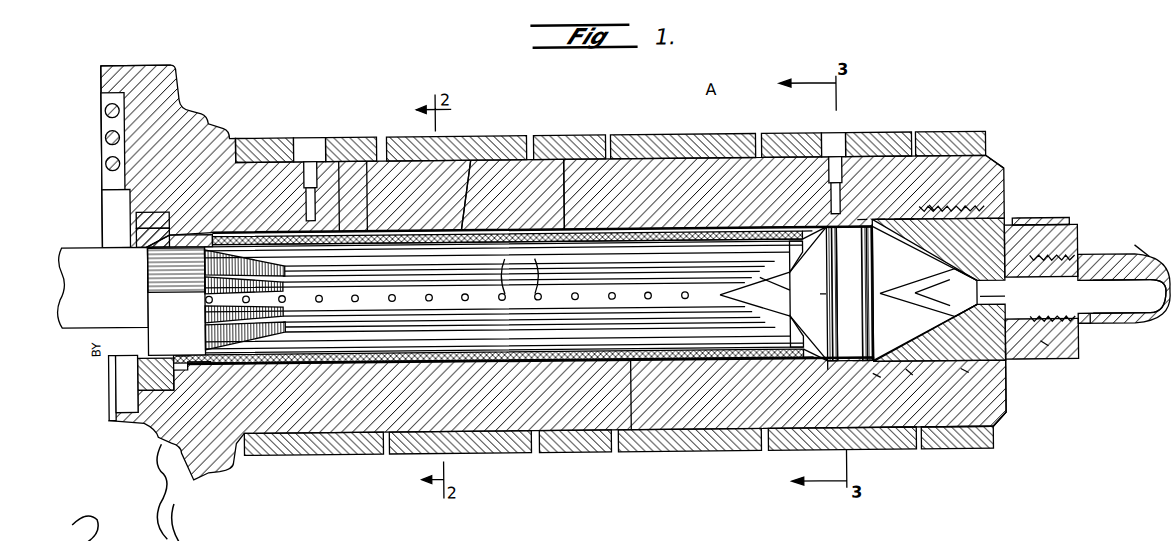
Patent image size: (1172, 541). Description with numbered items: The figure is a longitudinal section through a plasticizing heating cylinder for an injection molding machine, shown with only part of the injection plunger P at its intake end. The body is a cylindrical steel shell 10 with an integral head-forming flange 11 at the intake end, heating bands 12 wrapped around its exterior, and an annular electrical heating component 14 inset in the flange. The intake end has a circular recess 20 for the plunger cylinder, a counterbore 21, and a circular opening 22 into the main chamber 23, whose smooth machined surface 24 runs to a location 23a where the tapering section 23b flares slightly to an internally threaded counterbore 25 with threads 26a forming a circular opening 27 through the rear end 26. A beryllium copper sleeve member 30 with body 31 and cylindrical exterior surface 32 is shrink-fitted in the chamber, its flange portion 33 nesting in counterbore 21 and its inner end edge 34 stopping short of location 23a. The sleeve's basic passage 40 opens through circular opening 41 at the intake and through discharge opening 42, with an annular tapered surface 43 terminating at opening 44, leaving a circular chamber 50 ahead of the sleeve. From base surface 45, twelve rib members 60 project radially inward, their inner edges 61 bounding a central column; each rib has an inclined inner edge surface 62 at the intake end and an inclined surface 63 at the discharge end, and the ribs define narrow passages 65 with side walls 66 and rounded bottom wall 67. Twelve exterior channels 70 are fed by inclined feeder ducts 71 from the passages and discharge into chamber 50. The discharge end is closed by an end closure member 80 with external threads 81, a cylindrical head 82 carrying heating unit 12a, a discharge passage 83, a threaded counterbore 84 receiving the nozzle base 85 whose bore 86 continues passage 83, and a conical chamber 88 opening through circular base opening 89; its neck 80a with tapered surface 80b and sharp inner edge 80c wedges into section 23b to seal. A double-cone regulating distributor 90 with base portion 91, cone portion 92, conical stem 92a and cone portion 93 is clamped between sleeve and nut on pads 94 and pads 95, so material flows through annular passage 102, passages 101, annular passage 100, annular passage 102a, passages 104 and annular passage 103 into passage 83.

The shell 10 is at (492, 178).
The head-forming flange 11 is at (180, 87).
The heating bands 12 is at (410, 147).
The heating unit 12a is at (1072, 361).
The annular electrical heating component 14 is at (110, 108).
The circular recess 20 is at (126, 197).
The bore or circular recess 21 is at (137, 232).
The circular opening 22 is at (200, 250).
The main chamber 23 is at (352, 140).
The location 23a is at (858, 221).
The tapering section 23b is at (878, 221).
The surface 24 is at (565, 226).
The counterbore 25 is at (1000, 194).
The rear end 26 is at (1010, 402).
The internal threads 26a is at (950, 433).
The circular opening 27 is at (1008, 373).
The sleeve member 30 is at (632, 237).
The body 31 is at (192, 342).
The cylindrical exterior surface 32 is at (463, 226).
The flange portion 33 is at (137, 216).
The inner end edge 34 is at (854, 364).
The basic passage 40 is at (160, 305).
The circular opening 41 is at (133, 368).
The discharge opening 42 is at (826, 368).
The annular tapered surface 43 is at (822, 225).
The circular opening 44 is at (815, 362).
The base surface 45 is at (197, 352).
The circular chamber 50 is at (905, 441).
The rib members 60 is at (283, 258).
The inner edges 61 is at (340, 275).
The inclined inner edge surface 62 is at (205, 282).
The inclined surface 63 is at (803, 252).
The passages 65 is at (407, 302).
The side walls 66 is at (549, 341).
The bottom wall 67 is at (475, 314).
The channels 70 is at (600, 228).
The feeder ducts 71 is at (215, 228).
The end closure member 80 is at (1006, 215).
The neck 80a is at (905, 372).
The external circular surface 80b is at (963, 359).
The inner edge 80c is at (873, 380).
The external threads 81 is at (1000, 420).
The cylindrical head 82 is at (1097, 226).
The discharge or injection passage 83 is at (1010, 356).
The counterbore 84 is at (1042, 352).
The base 85 is at (1083, 333).
The bore 86 is at (1138, 248).
The conical chamber 88 is at (990, 321).
The circular base opening 89 is at (896, 221).
The regulating distributor 90 is at (915, 263).
The base portion 91 is at (842, 312).
The cone portion 92 is at (819, 276).
The conical stem 92a is at (752, 297).
The cone portion 93 is at (878, 263).
The pads 94 is at (808, 245).
The pads 95 is at (952, 290).
The annular passage 100 is at (838, 165).
The passages 101 is at (820, 326).
The annular passage 102 is at (755, 285).
The annular passage 102a is at (930, 208).
The annular passage 103 is at (1040, 210).
The passages 104 is at (935, 318).
The plunger P is at (71, 242).